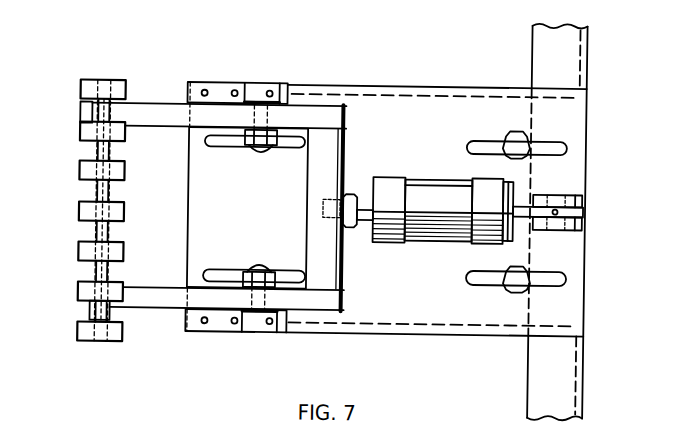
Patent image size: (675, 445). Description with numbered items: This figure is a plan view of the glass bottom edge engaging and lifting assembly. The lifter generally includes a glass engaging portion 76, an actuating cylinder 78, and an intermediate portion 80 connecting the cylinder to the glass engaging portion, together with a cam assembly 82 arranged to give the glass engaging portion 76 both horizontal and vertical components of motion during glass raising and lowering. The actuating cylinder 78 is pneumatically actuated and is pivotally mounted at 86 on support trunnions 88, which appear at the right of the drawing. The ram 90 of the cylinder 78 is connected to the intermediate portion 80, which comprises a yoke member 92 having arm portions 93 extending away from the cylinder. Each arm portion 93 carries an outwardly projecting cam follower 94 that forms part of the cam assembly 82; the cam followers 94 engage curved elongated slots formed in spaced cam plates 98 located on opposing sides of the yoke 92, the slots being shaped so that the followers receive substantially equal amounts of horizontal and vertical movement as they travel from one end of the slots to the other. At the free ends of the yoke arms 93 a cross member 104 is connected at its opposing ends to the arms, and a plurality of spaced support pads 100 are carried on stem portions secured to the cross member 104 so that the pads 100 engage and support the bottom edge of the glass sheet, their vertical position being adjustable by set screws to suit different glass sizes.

The glass engaging portion 76 is at (92, 210).
The actuating cylinder 78 is at (432, 188).
The intermediate portion 80 is at (208, 234).
The cam assembly 82 is at (218, 217).
The pivot mounting 86 is at (570, 194).
The support trunnions 88 is at (578, 224).
The ram 90 is at (365, 220).
The yoke member 92 is at (333, 160).
The arm portions 93 is at (156, 110).
The cam follower 94 is at (258, 84).
The cam plates 98 is at (194, 94).
The support pads 100 is at (75, 190).
The cross member 104 is at (106, 198).